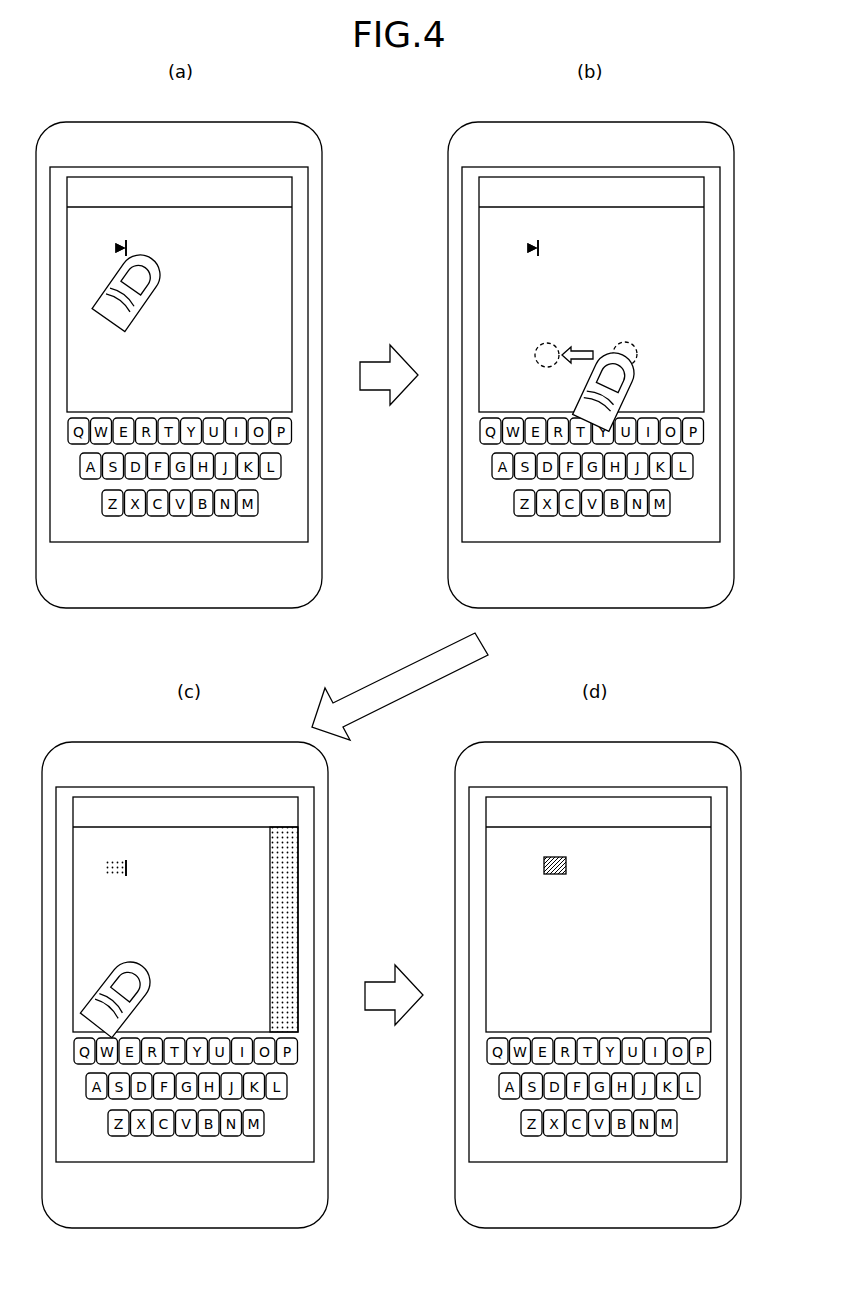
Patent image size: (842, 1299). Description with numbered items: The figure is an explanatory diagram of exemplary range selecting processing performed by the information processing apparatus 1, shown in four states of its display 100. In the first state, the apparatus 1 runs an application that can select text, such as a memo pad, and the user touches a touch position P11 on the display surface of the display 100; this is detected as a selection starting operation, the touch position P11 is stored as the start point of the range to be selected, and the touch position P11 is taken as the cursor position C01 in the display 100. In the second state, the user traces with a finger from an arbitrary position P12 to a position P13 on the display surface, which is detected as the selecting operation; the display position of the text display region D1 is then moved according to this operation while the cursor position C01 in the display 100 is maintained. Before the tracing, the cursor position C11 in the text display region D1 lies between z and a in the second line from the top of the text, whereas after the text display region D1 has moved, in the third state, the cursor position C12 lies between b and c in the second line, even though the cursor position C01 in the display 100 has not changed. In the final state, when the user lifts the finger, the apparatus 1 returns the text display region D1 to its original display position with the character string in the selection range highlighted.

The information processing apparatus 1 is at (249, 104).
The display 100 is at (308, 180).
The text display region D1 is at (292, 221).
The touch position P11 is at (102, 243).
The cursor position in the display C01 is at (102, 243).
The cursor position in the text display region C11 is at (514, 245).
The cursor position in the text display region C12 is at (100, 860).
The arbitrary position P12 is at (637, 347).
The position P13 is at (535, 357).